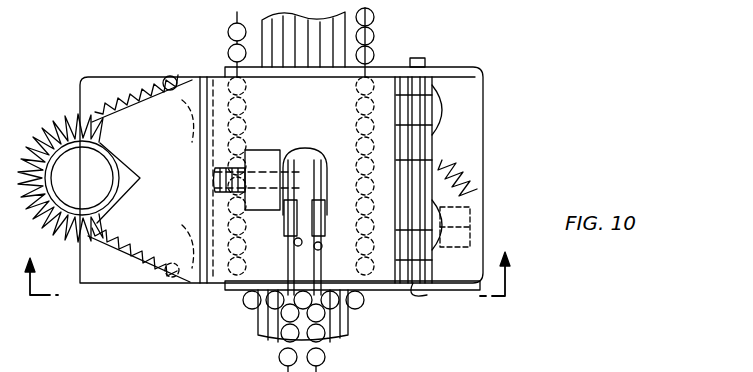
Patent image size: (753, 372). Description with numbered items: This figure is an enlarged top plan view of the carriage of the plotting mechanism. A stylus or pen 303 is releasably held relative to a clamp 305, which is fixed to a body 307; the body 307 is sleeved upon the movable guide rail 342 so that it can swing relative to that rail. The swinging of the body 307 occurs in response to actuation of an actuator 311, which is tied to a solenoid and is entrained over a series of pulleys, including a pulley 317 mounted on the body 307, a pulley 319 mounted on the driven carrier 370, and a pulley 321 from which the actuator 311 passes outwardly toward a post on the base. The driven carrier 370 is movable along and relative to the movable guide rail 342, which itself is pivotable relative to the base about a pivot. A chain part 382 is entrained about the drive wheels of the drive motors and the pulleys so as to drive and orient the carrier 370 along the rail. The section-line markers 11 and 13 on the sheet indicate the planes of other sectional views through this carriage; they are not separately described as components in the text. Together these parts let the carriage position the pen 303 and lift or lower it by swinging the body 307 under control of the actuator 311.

The stylus or pen 303 is at (100, 190).
The clamp 305 is at (172, 155).
The body 307 is at (218, 85).
The actuator 311 is at (335, 168).
The pulley 317 is at (428, 288).
The pulley 319 is at (430, 203).
The pulley 321 is at (432, 80).
The movable guide rail 342 is at (268, 24).
The driven carrier 370 is at (483, 104).
The chain part 382 is at (375, 18).
The section line 11 is at (268, 263).
The section line 13 is at (534, 361).